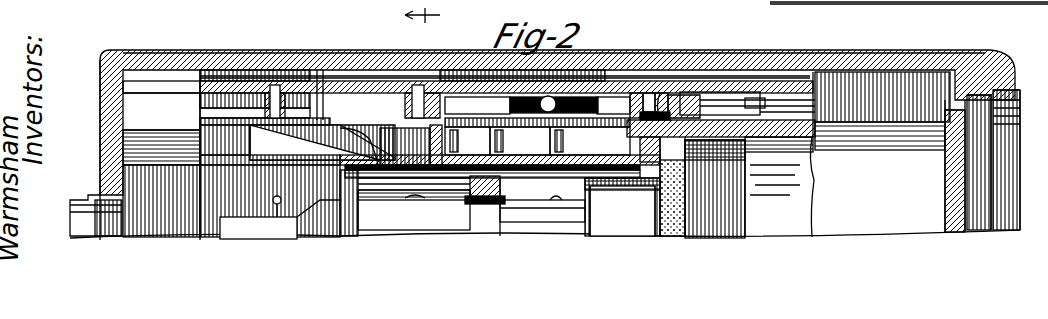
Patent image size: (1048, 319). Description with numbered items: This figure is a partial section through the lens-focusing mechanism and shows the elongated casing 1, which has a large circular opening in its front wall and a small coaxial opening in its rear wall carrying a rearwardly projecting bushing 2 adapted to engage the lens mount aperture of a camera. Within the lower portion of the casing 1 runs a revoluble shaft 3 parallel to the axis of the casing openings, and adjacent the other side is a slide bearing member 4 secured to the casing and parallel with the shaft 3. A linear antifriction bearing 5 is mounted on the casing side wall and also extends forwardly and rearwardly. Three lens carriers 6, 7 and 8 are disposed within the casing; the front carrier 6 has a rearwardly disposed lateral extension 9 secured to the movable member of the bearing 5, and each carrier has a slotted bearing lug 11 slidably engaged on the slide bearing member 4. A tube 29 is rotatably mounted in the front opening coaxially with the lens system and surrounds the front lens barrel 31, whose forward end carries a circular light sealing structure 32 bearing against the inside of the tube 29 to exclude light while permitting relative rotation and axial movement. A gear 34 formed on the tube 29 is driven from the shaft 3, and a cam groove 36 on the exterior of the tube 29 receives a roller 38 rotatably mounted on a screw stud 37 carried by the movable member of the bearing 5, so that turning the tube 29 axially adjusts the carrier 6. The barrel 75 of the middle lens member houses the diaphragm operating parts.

The casing 1 is at (938, 63).
The bushing 2 is at (92, 196).
The revoluble shaft 3 is at (430, 17).
The slide bearing member 4 is at (218, 145).
The linear antifriction bearing 5 is at (362, 90).
The front lens carrier 6 is at (690, 186).
The middle lens carrier 7 is at (482, 205).
The rear lens carrier 8 is at (341, 230).
The lateral extension 9 is at (322, 120).
The slotted bearing lug 11 is at (545, 142).
The tube 29 is at (850, 205).
The barrel 31 is at (630, 218).
The light sealing structure 32 is at (686, 208).
The gear 34 is at (890, 166).
The cam groove 36 is at (700, 112).
The screw stud 37 is at (650, 110).
The roller 38 is at (662, 118).
The barrel of the middle lens member 75 is at (440, 218).